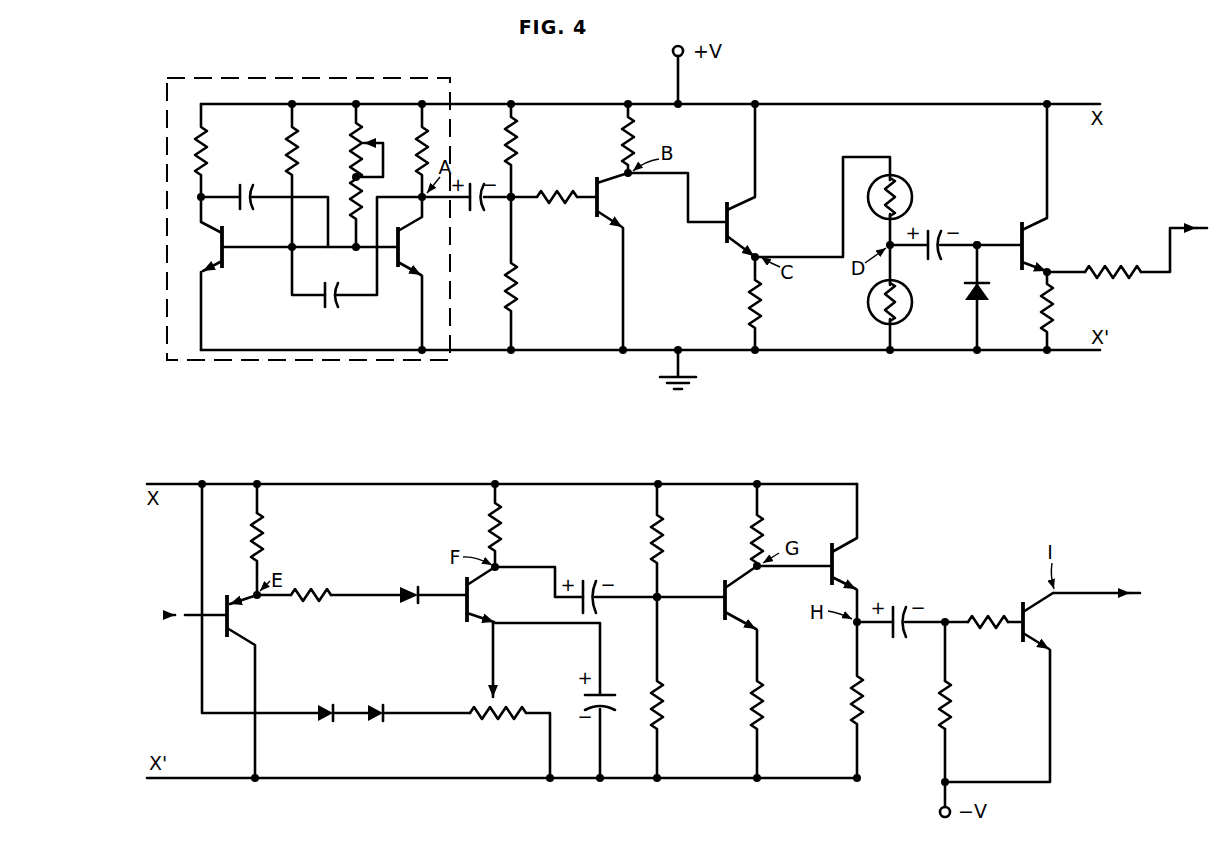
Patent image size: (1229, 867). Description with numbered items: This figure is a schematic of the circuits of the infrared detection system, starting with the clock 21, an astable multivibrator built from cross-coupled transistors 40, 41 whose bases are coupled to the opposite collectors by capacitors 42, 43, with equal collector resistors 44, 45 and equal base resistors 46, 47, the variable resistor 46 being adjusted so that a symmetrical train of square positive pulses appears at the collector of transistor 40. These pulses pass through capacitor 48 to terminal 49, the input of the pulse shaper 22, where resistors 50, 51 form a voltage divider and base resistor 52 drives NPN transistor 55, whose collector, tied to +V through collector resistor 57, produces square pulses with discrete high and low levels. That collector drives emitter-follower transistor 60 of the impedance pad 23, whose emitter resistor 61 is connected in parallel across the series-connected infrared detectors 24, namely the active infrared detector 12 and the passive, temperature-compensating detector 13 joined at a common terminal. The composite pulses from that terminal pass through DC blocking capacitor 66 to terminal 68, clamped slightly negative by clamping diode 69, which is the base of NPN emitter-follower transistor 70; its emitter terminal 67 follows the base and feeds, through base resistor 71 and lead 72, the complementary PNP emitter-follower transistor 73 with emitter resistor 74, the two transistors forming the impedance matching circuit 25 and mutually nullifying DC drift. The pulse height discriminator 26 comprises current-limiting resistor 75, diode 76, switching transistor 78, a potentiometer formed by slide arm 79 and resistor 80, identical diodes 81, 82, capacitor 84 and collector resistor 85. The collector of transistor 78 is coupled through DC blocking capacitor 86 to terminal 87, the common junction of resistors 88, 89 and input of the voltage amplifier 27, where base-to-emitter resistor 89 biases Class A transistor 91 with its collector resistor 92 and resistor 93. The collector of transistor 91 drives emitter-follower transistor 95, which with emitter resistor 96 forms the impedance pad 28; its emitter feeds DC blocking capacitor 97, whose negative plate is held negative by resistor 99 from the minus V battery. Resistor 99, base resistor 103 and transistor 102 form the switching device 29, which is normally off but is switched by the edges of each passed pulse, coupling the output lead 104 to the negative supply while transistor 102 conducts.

The infrared detector 12 is at (912, 189).
The passive detector 13 is at (908, 297).
The clock 21 is at (342, 334).
The pulse shaper 22 is at (585, 148).
The impedance pad 23 is at (727, 153).
The infrared detectors 24 is at (892, 143).
The impedance matching circuit 25 is at (1100, 170).
The pulse height discriminator 26 is at (508, 512).
The voltage amplifier 27 is at (802, 527).
The impedance pad 28 is at (903, 540).
The switching device 29 is at (1028, 565).
The transistor 40 is at (413, 236).
The transistor 41 is at (207, 277).
The capacitor 42 is at (249, 186).
The capacitor 43 is at (337, 300).
The collector resistor 44 is at (426, 146).
The collector resistor 45 is at (206, 151).
The base resistor 46 is at (357, 146).
The base resistor 47 is at (296, 151).
The capacitor 48 is at (472, 209).
The terminal 49 is at (514, 200).
The resistor 50 is at (517, 153).
The resistor 51 is at (517, 283).
The base resistor 52 is at (558, 189).
The transistor 55 is at (608, 211).
The collector resistor 57 is at (637, 144).
The emitter-follower transistor 60 is at (747, 233).
The emitter resistor 61 is at (753, 316).
The DC blocking capacitor 66 is at (937, 231).
The emitter terminal 67 is at (1050, 276).
The terminal 68 is at (977, 242).
The clamping diode 69 is at (980, 290).
The emitter-follower transistor 70 is at (1028, 251).
The base resistor 71 is at (1108, 266).
The lead 72 is at (1205, 235).
The emitter-follower transistor 73 is at (233, 619).
The emitter resistor 74 is at (262, 529).
The current-limiting resistor 75 is at (305, 591).
The diode 76 is at (407, 589).
The transistor 78 is at (470, 601).
The slide arm 79 is at (492, 649).
The resistor 80 is at (513, 703).
The diode 81 is at (377, 706).
The diode 82 is at (323, 706).
The capacitor 84 is at (610, 695).
The collector resistor 85 is at (502, 541).
The DC blocking capacitor 86 is at (592, 583).
The terminal 87 is at (661, 596).
The resistor 88 is at (652, 541).
The resistor 89 is at (661, 713).
The transistor 91 is at (733, 603).
The collector resistor 92 is at (758, 541).
The collector resistor 93 is at (752, 698).
The emitter-follower transistor 95 is at (840, 556).
The emitter resistor 96 is at (853, 689).
The DC blocking capacitor 97 is at (902, 633).
The resistor 99 is at (953, 711).
The transistor 102 is at (1027, 622).
The base resistor 103 is at (987, 618).
The lead 104 is at (1123, 590).